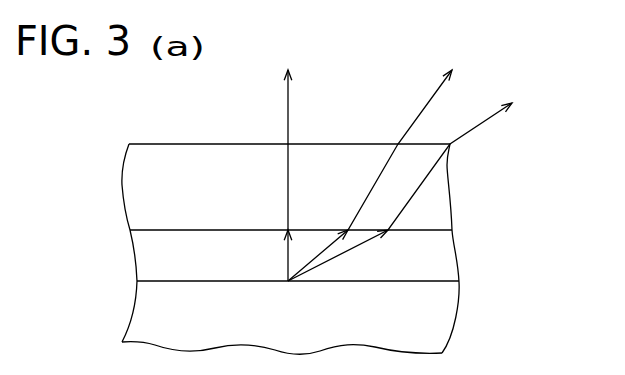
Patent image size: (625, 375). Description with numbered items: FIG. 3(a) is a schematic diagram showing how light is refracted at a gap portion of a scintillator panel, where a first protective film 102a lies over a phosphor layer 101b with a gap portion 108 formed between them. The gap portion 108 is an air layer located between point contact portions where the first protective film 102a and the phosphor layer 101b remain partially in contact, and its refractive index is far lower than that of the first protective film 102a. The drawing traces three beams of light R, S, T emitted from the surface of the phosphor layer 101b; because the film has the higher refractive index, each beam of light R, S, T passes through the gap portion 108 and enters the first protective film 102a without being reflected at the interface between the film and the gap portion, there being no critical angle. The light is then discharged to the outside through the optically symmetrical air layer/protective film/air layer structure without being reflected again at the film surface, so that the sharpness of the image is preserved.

The first protective film 102a is at (440, 202).
The gap portion 108 is at (440, 260).
The phosphor layer 101b is at (440, 325).
The beam of light R is at (276, 175).
The beam of light S is at (370, 175).
The beam of light T is at (400, 192).